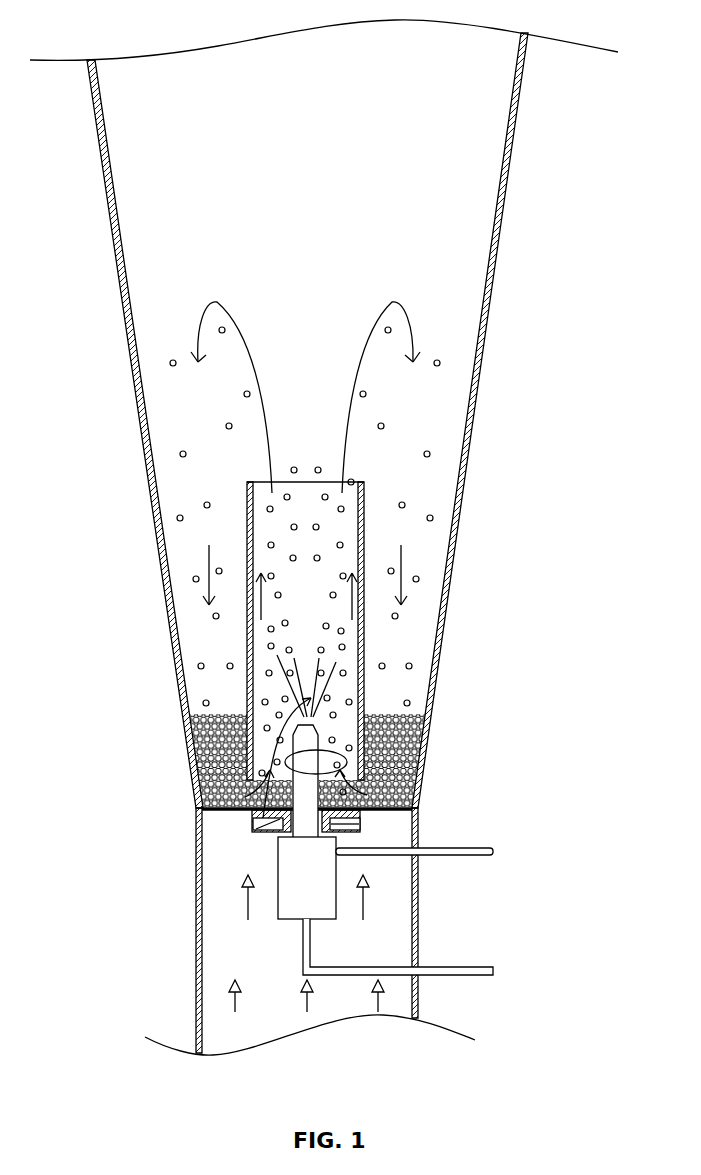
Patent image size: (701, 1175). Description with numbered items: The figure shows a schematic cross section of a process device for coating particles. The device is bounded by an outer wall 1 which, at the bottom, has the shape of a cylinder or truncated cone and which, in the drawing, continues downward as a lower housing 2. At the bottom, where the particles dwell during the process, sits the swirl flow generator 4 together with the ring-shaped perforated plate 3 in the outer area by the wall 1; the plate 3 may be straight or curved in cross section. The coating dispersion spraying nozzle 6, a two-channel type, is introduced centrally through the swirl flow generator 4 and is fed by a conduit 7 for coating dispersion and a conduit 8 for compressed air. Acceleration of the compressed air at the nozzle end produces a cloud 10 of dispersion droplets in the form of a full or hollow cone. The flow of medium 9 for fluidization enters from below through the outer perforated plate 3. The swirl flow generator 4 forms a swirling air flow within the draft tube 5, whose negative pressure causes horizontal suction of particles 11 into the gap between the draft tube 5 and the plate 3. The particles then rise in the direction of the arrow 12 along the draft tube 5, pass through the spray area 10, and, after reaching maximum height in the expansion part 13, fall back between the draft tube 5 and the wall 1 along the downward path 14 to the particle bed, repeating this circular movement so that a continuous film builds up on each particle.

The outer wall 1 is at (477, 363).
The lower housing 2 is at (418, 937).
The perforated plate 3 is at (377, 813).
The swirl flow generator 4 is at (265, 815).
The draft tube 5 is at (358, 508).
The spraying nozzle 6 is at (299, 900).
The conduit for coating dispersion 7 is at (500, 971).
The conduit for compressed air 8 is at (500, 851).
The flow of medium for fluidization 9 is at (306, 959).
The cloud of dispersion droplets 10 is at (298, 673).
The horizontal suction of particles 11 is at (306, 758).
The arrow of particle rise direction 12 is at (306, 599).
The expansion part 13 is at (305, 396).
The downward particle flow in annulus 14 is at (301, 563).